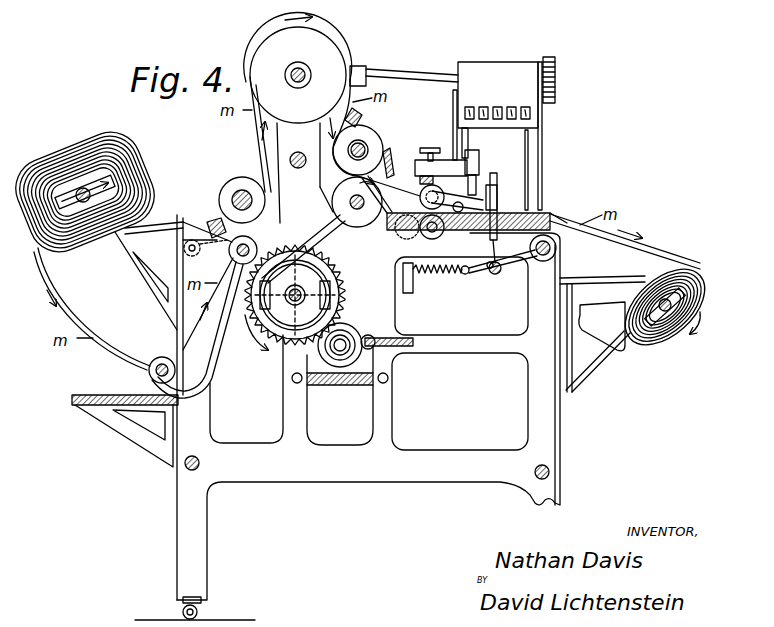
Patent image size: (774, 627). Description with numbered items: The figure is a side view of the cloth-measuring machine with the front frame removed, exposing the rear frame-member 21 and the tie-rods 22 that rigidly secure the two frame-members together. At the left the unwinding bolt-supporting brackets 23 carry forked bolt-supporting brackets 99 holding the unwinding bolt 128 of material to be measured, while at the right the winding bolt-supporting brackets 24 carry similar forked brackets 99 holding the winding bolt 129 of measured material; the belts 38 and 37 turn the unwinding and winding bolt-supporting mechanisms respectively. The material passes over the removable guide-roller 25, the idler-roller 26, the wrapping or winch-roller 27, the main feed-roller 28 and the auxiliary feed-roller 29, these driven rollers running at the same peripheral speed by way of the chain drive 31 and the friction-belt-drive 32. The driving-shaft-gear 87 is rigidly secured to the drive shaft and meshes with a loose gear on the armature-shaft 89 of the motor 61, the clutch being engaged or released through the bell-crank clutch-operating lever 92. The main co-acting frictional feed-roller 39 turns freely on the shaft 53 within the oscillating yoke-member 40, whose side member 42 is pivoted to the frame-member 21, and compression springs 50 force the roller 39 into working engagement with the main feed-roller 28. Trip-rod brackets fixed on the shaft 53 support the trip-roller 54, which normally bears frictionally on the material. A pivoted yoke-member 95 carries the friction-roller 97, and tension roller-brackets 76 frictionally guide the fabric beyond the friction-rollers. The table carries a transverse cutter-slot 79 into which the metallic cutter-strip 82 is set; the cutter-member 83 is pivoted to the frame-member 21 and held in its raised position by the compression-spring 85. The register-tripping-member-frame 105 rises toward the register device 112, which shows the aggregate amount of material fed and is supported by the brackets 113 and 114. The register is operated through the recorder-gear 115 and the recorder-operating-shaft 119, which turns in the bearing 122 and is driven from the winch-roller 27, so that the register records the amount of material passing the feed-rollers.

The rear frame-member 21 is at (545, 428).
The tie-rods 22 is at (298, 168).
The unwinding bolt-supporting-brackets 23 is at (152, 285).
The winding bolt-supporting brackets 24 is at (593, 367).
The removable guide-roller 25 is at (155, 357).
The idler-roller 26 is at (279, 232).
The wrapping or winch-roller 27 is at (323, 48).
The main feed-roller 28 is at (348, 202).
The auxiliary feed-roller 29 is at (426, 238).
The chain drive 31 is at (330, 225).
The friction-belt-drive 32 is at (380, 297).
The belt 37 is at (590, 279).
The belt 38 is at (167, 218).
The main co-acting frictional feed-roller 39 is at (378, 141).
The yoke-member 40 is at (400, 150).
The side member of yoke-member 42 is at (410, 280).
The compression springs 50 is at (440, 275).
The shaft 53 is at (350, 148).
The trip-roller 54 is at (360, 116).
The motor 61 is at (312, 350).
The tension roller-brackets 76 is at (487, 203).
The transverse cutter-slot 79 is at (486, 272).
The metallic cutter-strip 82 is at (492, 230).
The cutter-member 83 is at (497, 193).
The compression-spring 85 is at (497, 275).
The driving-shaft-gear 87 is at (267, 333).
The armature-shaft 89 is at (337, 386).
The clutch-operating lever 92 is at (417, 354).
The yoke-member 95 is at (205, 200).
The friction-roller 97 is at (235, 177).
The bolt-supporting brackets 99 is at (133, 143).
The register-tripping-member-frame 105 is at (482, 192).
The register device 112 is at (495, 75).
The bracket 113 is at (453, 138).
The bracket 114 is at (530, 147).
The recorder-gear 115 is at (557, 62).
The recorder-operating-shaft 119 is at (413, 78).
The bearing 122 is at (366, 72).
The unwinding-bolt 128 is at (67, 140).
The winding-bolt 129 is at (708, 297).